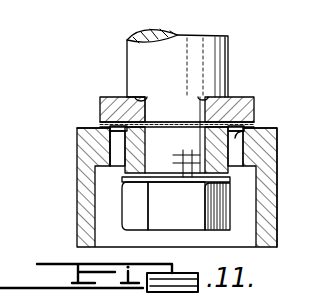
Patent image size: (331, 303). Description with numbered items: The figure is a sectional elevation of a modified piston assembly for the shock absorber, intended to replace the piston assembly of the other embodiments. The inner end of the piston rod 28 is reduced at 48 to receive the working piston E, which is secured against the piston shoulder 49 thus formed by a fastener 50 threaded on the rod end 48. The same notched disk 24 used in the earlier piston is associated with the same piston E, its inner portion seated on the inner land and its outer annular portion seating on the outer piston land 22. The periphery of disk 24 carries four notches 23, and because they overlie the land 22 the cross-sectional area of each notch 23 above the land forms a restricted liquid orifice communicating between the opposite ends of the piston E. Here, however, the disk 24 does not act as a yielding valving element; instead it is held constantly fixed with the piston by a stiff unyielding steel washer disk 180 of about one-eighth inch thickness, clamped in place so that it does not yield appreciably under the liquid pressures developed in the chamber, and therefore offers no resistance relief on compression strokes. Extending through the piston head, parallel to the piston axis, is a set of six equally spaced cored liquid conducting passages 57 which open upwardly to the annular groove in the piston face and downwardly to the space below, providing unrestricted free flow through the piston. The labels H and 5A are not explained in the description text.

The piston rod 28 is at (229, 37).
The steel washer disk 180 is at (236, 99).
The notches 23 is at (101, 124).
The housing H is at (277, 138).
The notched disk 24 is at (128, 97).
The outer piston land 22 is at (108, 146).
The liquid conducting passages 57 is at (110, 148).
The working piston E is at (82, 221).
The piston shoulder 49 is at (150, 97).
The sleeve 5A is at (205, 115).
The reduced rod end 48 is at (189, 141).
The fastener 50 is at (193, 206).